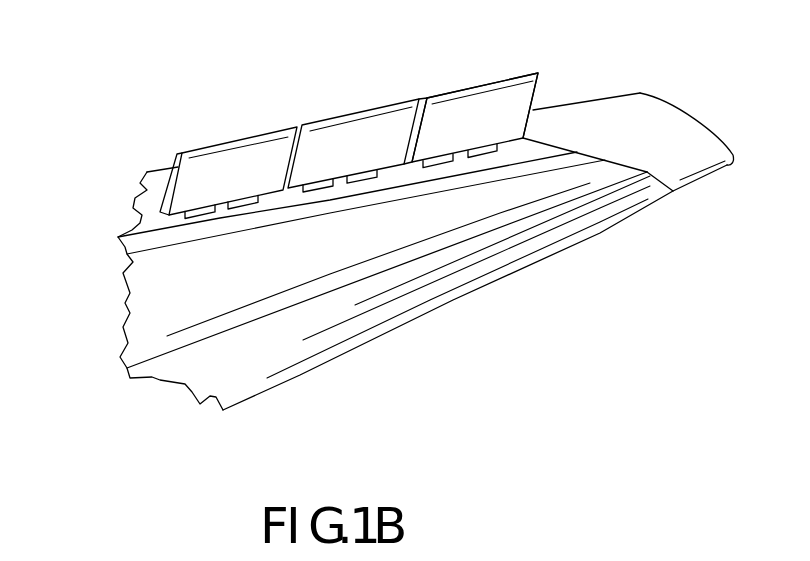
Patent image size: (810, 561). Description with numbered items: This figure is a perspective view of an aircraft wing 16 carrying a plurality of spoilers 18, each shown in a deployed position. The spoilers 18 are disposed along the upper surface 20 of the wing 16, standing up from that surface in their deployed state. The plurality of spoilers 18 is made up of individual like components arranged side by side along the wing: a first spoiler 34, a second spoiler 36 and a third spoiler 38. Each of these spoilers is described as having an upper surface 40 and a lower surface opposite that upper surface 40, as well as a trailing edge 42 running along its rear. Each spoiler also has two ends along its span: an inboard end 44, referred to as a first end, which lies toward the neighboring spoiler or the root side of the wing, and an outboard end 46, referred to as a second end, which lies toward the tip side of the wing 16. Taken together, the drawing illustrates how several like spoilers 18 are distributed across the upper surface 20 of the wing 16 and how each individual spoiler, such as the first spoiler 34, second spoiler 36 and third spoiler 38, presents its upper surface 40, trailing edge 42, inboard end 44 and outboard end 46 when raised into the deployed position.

The wing 16 is at (90, 100).
The plurality of spoilers 18 is at (222, 100).
The upper surface 20 is at (240, 286).
The first spoiler 34 is at (267, 137).
The second spoiler 36 is at (374, 113).
The third spoiler 38 is at (470, 103).
The upper surface 40 is at (499, 134).
The trailing edge 42 is at (508, 78).
The inboard end 44 is at (428, 132).
The outboard end 46 is at (535, 97).